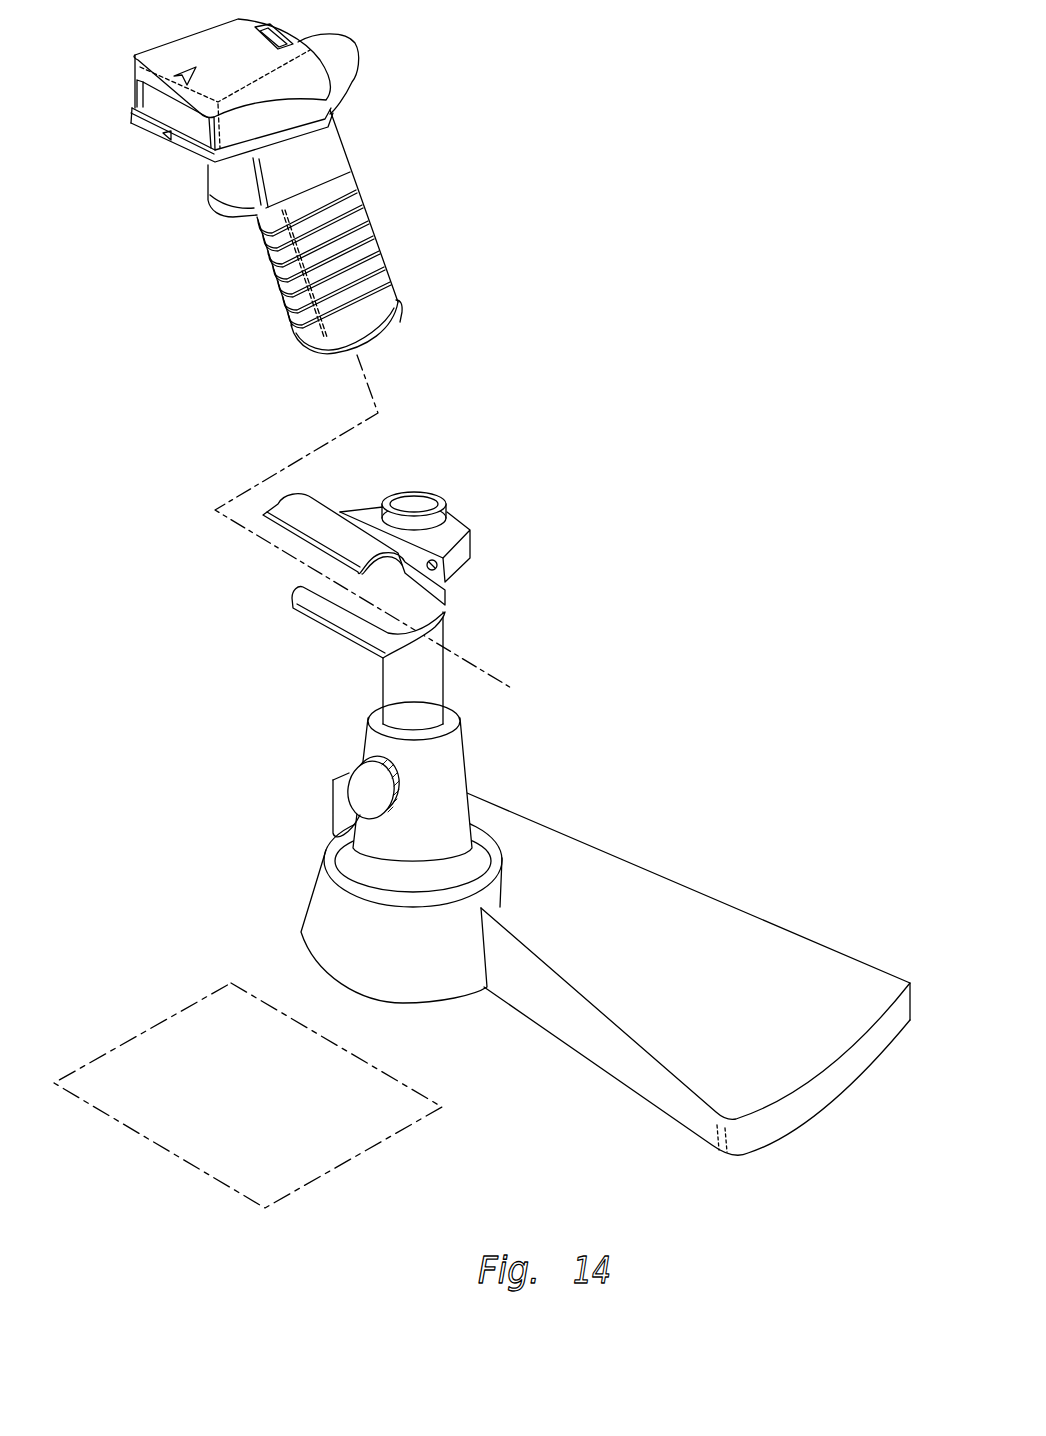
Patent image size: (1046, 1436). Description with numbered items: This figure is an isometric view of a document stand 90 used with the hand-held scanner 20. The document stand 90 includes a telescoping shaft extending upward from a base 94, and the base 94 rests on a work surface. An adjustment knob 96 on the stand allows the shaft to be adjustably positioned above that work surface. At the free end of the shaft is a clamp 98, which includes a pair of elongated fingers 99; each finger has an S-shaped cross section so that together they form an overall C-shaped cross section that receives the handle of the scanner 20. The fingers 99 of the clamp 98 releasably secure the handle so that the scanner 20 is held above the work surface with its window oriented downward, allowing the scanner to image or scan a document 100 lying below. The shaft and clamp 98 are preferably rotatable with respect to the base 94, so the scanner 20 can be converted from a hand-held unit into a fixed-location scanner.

The scanner 20 is at (383, 164).
The document stand 90 is at (579, 805).
The base 94 is at (577, 1032).
The adjustment knob 96 is at (355, 770).
The clamp 98 is at (458, 530).
The elongated fingers 99 is at (302, 507).
The document 100 is at (357, 1157).